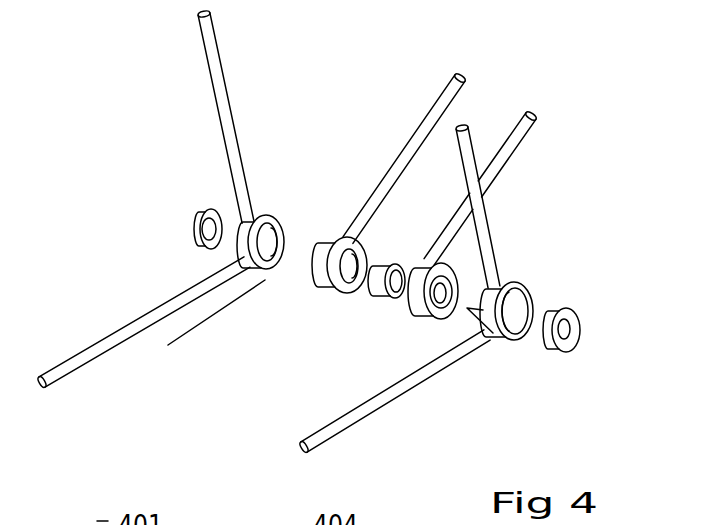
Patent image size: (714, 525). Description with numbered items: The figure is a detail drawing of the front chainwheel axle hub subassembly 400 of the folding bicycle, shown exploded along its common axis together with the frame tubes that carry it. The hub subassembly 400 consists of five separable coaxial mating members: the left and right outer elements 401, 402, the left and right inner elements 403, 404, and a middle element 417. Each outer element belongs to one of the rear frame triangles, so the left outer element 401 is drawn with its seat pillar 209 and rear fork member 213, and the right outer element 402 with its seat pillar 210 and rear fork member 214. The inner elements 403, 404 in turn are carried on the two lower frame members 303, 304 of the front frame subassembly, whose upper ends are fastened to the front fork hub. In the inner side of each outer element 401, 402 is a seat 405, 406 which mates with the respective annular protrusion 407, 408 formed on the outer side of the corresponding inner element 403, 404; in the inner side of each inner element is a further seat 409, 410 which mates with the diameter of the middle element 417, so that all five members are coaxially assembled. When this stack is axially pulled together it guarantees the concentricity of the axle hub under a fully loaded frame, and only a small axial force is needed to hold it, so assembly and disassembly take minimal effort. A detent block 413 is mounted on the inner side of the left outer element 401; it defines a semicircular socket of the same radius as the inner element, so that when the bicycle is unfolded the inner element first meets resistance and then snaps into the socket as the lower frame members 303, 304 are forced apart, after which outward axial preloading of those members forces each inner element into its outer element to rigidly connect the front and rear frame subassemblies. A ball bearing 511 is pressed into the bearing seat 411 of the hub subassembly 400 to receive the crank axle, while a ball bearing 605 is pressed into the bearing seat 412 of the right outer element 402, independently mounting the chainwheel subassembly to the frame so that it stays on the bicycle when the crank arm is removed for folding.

The seat pillar 209 is at (213, 91).
The seat pillar 210 is at (478, 148).
The rear fork member 213 is at (128, 317).
The rear fork member 214 is at (358, 427).
The lower frame member 303 is at (428, 95).
The lower frame member 304 is at (548, 120).
The front chainwheel hub subassembly 400 is at (246, 367).
The left outer element 401 is at (262, 208).
The right outer element 402 is at (517, 282).
The left inner element 403 is at (368, 253).
The right inner element 404 is at (420, 260).
The seat 405 is at (283, 230).
The seat 406 is at (482, 343).
The annular protrusion 407 is at (310, 273).
The annular protrusion 408 is at (440, 320).
The seat 409 is at (340, 287).
The seat 410 is at (392, 300).
The bearing seat 411 is at (223, 207).
The bearing seat 412 is at (525, 307).
The detent block 413 is at (201, 331).
The middle element 417 is at (382, 300).
The ball bearing 511 is at (193, 245).
The ball bearing 605 is at (580, 310).